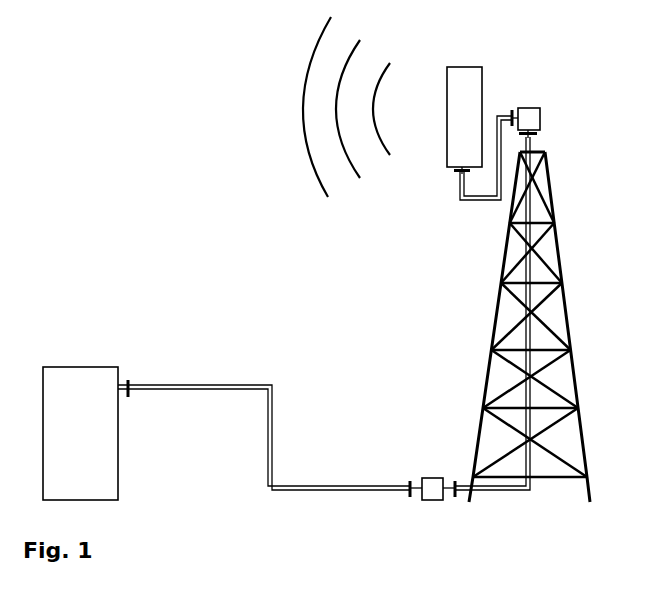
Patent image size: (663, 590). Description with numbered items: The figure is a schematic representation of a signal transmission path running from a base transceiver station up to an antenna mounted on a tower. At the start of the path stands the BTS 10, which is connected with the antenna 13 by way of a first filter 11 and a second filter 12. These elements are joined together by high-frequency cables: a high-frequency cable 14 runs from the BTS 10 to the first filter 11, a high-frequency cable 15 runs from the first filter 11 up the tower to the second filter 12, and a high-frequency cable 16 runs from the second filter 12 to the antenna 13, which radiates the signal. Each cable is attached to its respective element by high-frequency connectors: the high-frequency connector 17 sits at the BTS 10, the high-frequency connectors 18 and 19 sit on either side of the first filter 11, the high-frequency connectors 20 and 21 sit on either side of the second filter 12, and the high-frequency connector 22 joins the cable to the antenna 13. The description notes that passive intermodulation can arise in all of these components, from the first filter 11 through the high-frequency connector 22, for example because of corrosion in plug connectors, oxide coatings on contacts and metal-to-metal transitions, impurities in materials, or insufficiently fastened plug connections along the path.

The BTS 10 is at (92, 363).
The first filter 11 is at (437, 476).
The second filter 12 is at (540, 117).
The antenna 13 is at (463, 65).
The high-frequency cable 14 is at (267, 437).
The high-frequency cable 15 is at (527, 492).
The high-frequency cable 16 is at (485, 201).
The high-frequency connector 17 is at (130, 383).
The high-frequency connector 18 is at (403, 500).
The high-frequency connector 19 is at (457, 498).
The high-frequency connector 20 is at (533, 135).
The high-frequency connector 21 is at (508, 106).
The high-frequency connector 22 is at (457, 174).